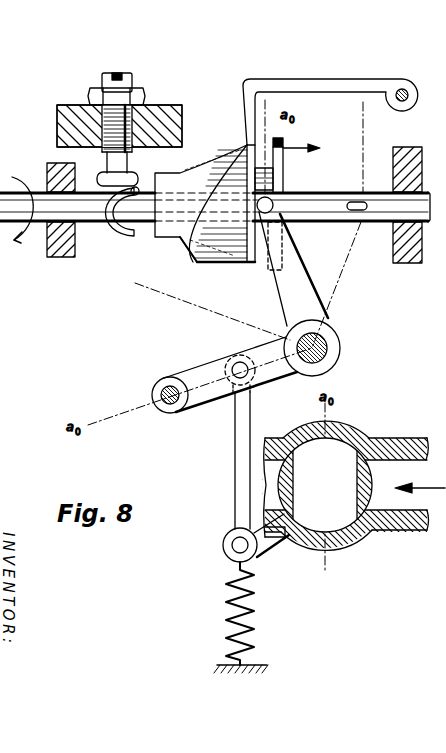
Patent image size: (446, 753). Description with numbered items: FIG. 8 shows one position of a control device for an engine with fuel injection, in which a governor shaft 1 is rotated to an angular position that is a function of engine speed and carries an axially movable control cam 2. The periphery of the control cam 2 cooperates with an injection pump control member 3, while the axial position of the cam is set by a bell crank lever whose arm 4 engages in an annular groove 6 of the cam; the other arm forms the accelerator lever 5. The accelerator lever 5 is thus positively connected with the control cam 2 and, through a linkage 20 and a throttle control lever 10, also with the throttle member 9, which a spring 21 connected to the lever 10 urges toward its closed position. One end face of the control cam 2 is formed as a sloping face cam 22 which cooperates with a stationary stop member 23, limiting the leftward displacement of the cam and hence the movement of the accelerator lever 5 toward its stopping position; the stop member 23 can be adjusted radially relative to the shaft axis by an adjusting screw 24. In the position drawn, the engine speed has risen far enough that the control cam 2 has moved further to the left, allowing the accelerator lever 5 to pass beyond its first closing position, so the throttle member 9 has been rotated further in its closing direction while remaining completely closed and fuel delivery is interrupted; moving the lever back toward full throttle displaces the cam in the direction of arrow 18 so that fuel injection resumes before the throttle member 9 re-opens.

The governor shaft 1 is at (387, 213).
The control cam 2 is at (187, 240).
The injection pump control member 3 is at (315, 83).
The bell crank lever arm 4 is at (295, 278).
The accelerator lever 5 is at (212, 392).
The annular groove 6 is at (283, 176).
The throttle member 9 is at (373, 503).
The throttle control lever 10 is at (272, 540).
The arrow 18 is at (299, 146).
The linkage 20 is at (243, 473).
The spring 21 is at (230, 613).
The face cam 22 is at (105, 228).
The stationary stop member 23 is at (127, 180).
The adjusting screw 24 is at (132, 83).